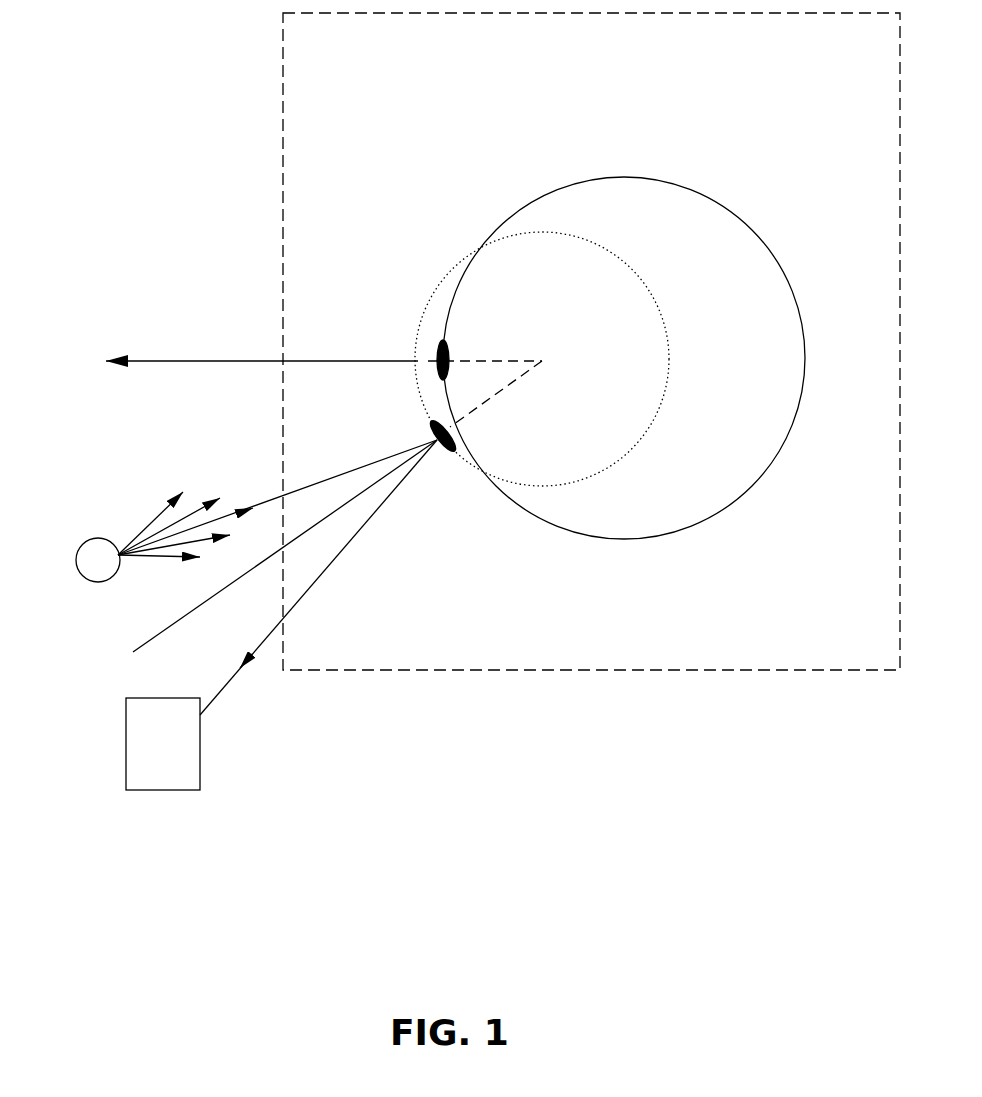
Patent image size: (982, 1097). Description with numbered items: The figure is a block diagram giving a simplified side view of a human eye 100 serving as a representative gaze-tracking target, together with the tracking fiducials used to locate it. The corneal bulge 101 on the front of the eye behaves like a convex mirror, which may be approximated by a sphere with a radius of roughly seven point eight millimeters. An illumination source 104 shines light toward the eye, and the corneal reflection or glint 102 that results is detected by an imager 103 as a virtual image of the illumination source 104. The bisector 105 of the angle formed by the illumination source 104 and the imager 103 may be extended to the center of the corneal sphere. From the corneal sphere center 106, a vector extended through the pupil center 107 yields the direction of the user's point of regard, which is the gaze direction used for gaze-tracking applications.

The human eye 100 is at (345, 50).
The corneal bulge 101 is at (445, 273).
The corneal reflection or glint 102 is at (441, 458).
The imager 103 is at (118, 772).
The illumination source 104 is at (70, 549).
The bisector 105 is at (120, 655).
The corneal sphere center 106 is at (170, 350).
The pupil center 107 is at (432, 343).